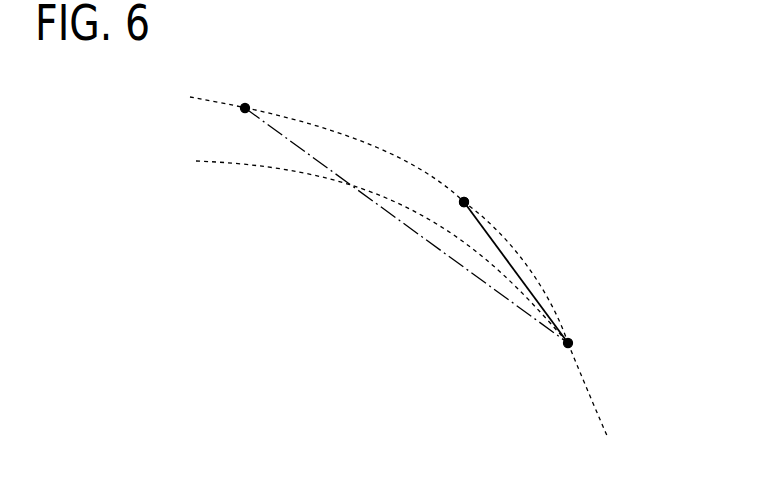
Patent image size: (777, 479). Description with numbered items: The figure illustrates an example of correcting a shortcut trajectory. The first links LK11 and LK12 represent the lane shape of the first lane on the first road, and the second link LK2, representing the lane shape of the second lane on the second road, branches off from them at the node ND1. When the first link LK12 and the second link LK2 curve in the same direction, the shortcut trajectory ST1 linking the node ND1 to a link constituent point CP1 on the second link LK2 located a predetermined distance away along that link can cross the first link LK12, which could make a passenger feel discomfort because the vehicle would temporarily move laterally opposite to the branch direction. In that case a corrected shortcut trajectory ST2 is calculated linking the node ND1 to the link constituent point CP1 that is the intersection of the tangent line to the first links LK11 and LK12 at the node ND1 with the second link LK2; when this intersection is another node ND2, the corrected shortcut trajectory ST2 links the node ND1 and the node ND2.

The link constituent point CP1 is at (247, 106).
The node ND2 is at (514, 169).
The node ND1 is at (572, 340).
The second link LK2 is at (377, 147).
The first link LK11 is at (593, 388).
The first link LK12 is at (268, 163).
The shortcut trajectory ST1 is at (413, 229).
The corrected shortcut trajectory ST2 is at (512, 260).